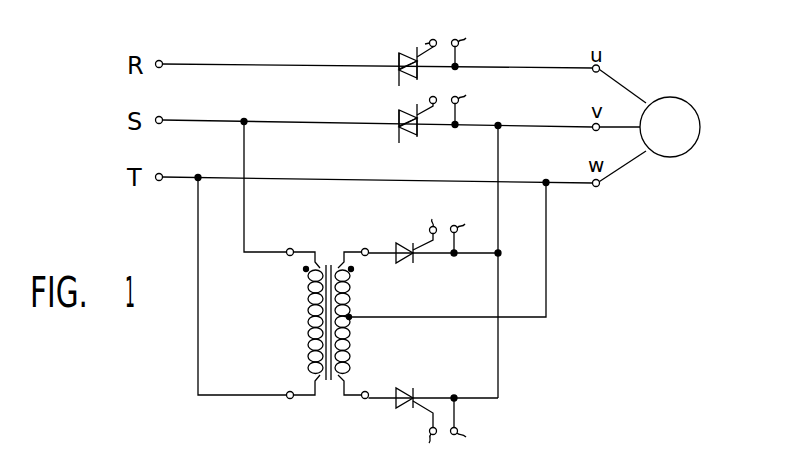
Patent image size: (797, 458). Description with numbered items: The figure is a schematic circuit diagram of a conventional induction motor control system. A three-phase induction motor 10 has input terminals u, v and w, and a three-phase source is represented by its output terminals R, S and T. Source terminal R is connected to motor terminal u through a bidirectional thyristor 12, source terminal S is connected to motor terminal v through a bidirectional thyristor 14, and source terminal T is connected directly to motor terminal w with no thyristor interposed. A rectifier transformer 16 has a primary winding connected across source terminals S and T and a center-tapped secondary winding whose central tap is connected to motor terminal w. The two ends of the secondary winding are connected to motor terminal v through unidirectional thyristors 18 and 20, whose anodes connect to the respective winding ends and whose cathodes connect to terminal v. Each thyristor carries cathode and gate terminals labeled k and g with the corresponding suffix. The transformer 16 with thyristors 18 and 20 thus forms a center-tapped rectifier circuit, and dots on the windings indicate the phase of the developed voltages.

The three-phase induction motor 10 is at (700, 128).
The bidirectional thyristor 12 is at (399, 83).
The bidirectional thyristor 14 is at (399, 146).
The rectifier transformer 16 is at (331, 262).
The unidirectional thyristor 18 is at (405, 265).
The unidirectional thyristor 20 is at (407, 388).